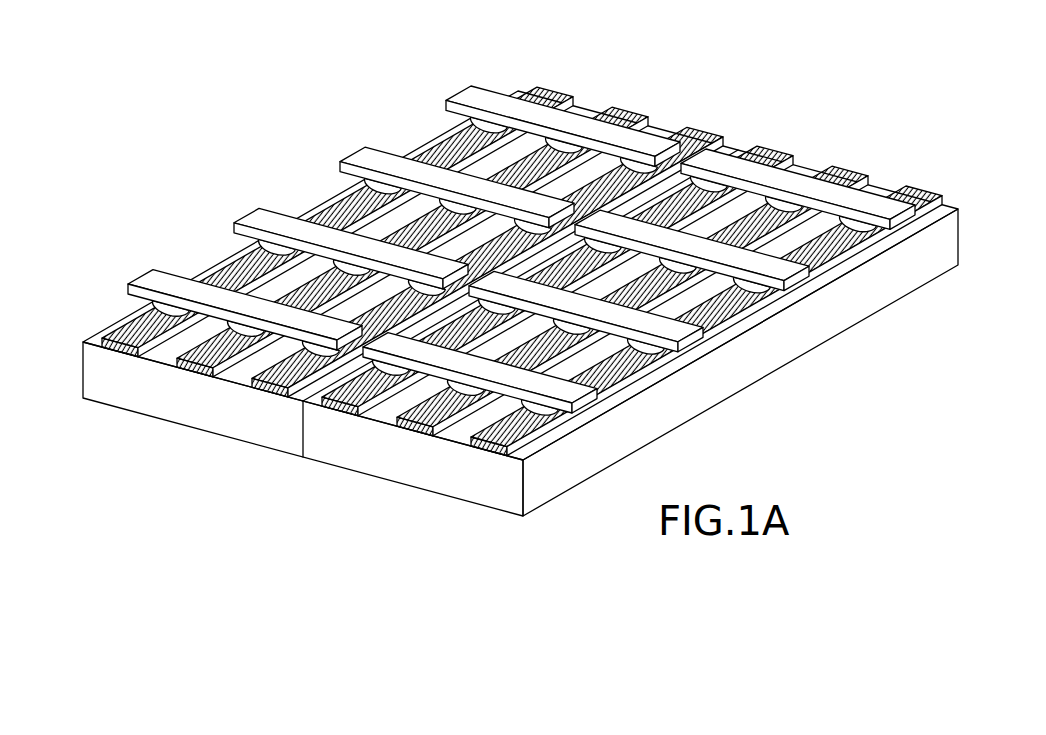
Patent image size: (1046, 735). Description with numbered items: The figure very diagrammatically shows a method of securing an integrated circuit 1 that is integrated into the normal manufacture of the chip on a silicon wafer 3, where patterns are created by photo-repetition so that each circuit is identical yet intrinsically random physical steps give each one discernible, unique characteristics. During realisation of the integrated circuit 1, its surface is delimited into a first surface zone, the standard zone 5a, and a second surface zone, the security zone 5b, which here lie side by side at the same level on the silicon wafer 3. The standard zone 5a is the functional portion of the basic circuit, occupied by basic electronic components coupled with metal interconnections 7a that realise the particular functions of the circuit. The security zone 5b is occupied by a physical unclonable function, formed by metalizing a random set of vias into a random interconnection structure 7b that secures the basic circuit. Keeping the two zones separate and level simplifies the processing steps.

The integrated circuit 1 is at (500, 290).
The silicon wafer 3 is at (203, 415).
The standard zone 5a is at (822, 140).
The security zone 5b is at (608, 82).
The metal interconnections 7a is at (690, 291).
The random interconnection structure 7b is at (130, 305).